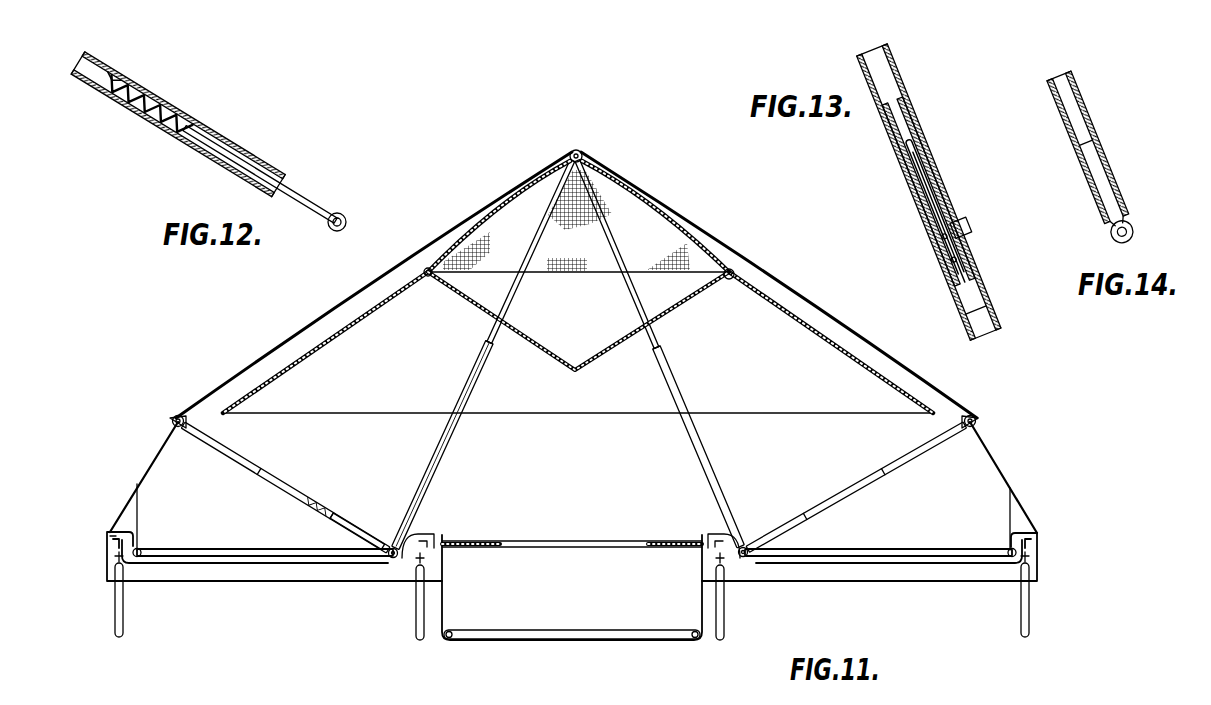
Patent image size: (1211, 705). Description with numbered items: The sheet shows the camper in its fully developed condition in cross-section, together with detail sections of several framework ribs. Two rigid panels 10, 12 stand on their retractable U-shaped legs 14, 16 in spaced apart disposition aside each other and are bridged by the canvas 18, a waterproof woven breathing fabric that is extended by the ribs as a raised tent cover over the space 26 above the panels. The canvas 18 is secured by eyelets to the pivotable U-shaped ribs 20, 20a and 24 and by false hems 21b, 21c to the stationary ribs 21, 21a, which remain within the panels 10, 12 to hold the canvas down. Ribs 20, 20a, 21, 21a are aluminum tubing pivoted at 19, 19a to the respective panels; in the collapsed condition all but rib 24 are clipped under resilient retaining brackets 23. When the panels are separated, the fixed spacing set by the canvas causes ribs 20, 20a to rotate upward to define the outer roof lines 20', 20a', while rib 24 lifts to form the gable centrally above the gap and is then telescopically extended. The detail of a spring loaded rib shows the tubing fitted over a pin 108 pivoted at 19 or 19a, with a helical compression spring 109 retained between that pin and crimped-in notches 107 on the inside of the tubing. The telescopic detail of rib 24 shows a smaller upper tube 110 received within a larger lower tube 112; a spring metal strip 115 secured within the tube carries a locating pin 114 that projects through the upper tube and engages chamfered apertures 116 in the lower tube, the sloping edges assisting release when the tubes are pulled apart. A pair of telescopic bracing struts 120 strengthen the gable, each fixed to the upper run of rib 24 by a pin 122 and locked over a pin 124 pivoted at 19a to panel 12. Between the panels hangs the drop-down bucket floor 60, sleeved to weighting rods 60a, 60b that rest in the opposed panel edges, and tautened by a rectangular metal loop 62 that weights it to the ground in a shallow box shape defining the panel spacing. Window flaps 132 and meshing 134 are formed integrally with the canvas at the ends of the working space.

In FIG. 11, the rigid panel 10 is at (232, 581).
In FIG. 11, the rigid panel 12 is at (869, 581).
In FIG. 11, the retractable U-shaped legs 14 is at (124, 628).
In FIG. 11, the retractable U-shaped legs 16 is at (1021, 612).
In FIG. 11, the canvas 18 is at (681, 210).
In FIG. 11, the pivotal connection 19 is at (389, 560).
In FIG. 12, the pivotal connection 19 is at (342, 219).
In FIG. 11, the pivotal connection 19a is at (750, 566).
In FIG. 11, the pivotable U-shaped rib 20 is at (285, 487).
In FIG. 11, the outer roof line 20' is at (152, 412).
In FIG. 11, the pivotable U-shaped rib 20a is at (856, 487).
In FIG. 12, the pivotable U-shaped rib 20a is at (178, 125).
In FIG. 11, the outer roof line 20a' is at (1001, 412).
In FIG. 11, the stationary U-shaped rib 21 is at (245, 551).
In FIG. 11, the stationary U-shaped rib 21a is at (898, 551).
In FIG. 11, the false hem 21b is at (131, 500).
In FIG. 11, the false hem 21c is at (1014, 506).
In FIG. 11, the resilient retaining bracket 23 is at (108, 536).
In FIG. 11, the pivotable U-shaped rib 24 is at (576, 150).
In FIG. 11, the space 26 is at (588, 460).
In FIG. 11, the drop-down bucket floor 60 is at (478, 652).
In FIG. 11, the weighting rod 60a is at (404, 562).
In FIG. 11, the weighting rod 60b is at (738, 562).
In FIG. 11, the rectangular metal loop 62 is at (566, 639).
In FIG. 11, the crimped-in notches 107 is at (333, 513).
In FIG. 12, the crimped-in notches 107 is at (118, 80).
In FIG. 11, the pin 108 is at (388, 546).
In FIG. 12, the pin 108 is at (306, 202).
In FIG. 12, the helical compression spring 109 is at (192, 123).
In FIG. 11, the upper tube 110 is at (514, 292).
In FIG. 13, the upper tube 110 is at (898, 70).
In FIG. 11, the lower tube 112 is at (436, 478).
In FIG. 13, the lower tube 112 is at (921, 97).
In FIG. 11, the locating pin 114 is at (472, 372).
In FIG. 13, the locating pin 114 is at (975, 228).
In FIG. 13, the spring metal strip 115 is at (913, 215).
In FIG. 13, the chamfered apertures 116 is at (956, 194).
In FIG. 11, the telescopic bracing strut 120 is at (697, 440).
In FIG. 11, the pin 122 is at (583, 153).
In FIG. 14, the pin 124 is at (1106, 191).
In FIG. 11, the window flaps 132 is at (338, 358).
In FIG. 11, the meshing 134 is at (513, 230).